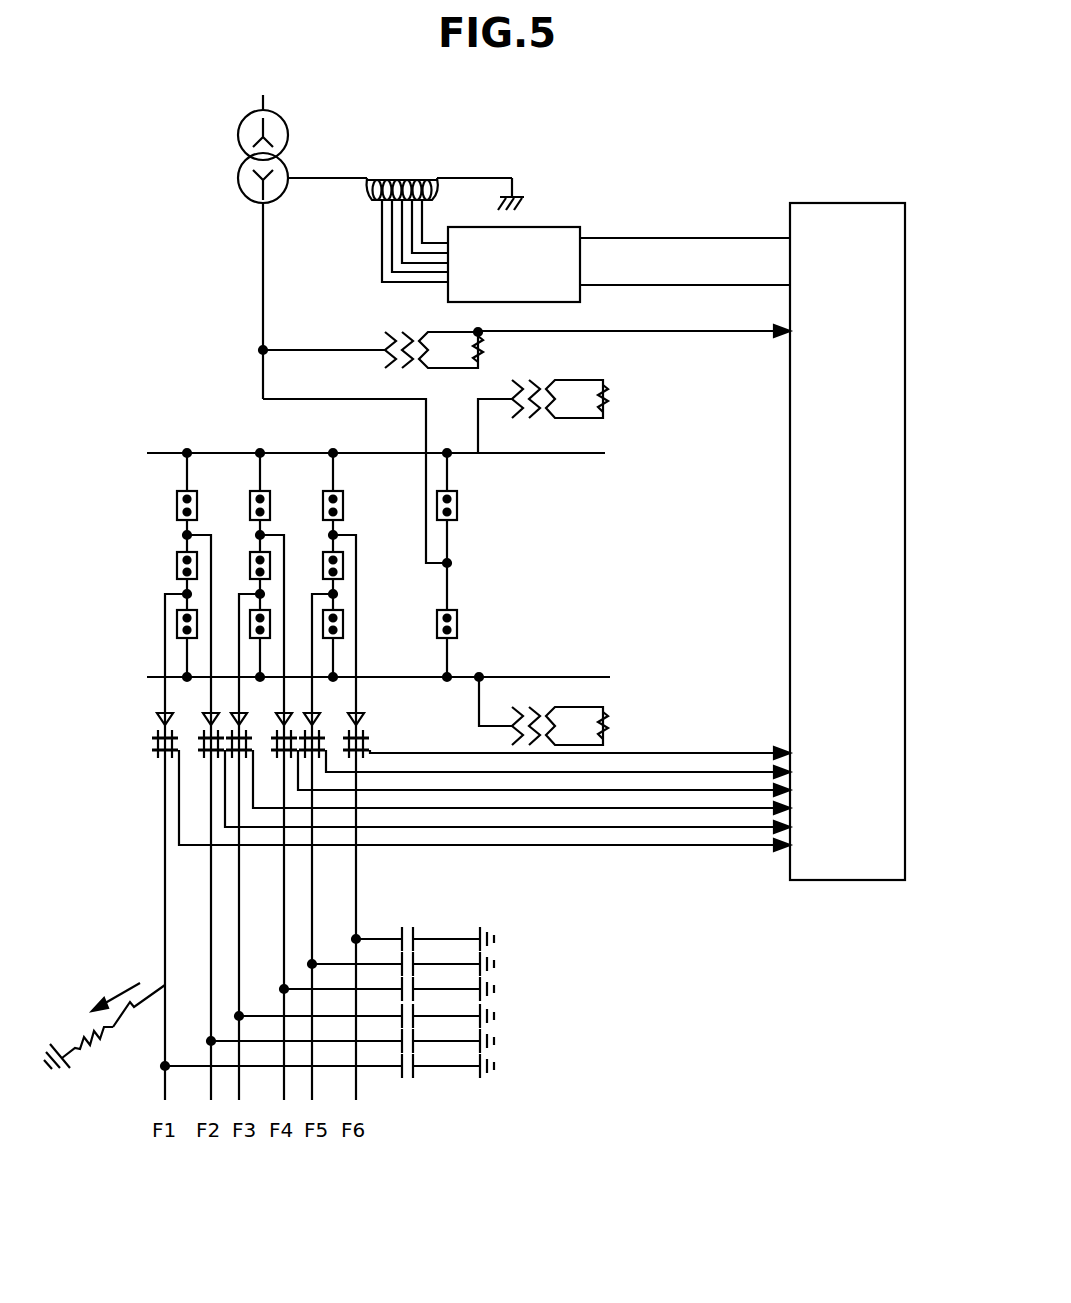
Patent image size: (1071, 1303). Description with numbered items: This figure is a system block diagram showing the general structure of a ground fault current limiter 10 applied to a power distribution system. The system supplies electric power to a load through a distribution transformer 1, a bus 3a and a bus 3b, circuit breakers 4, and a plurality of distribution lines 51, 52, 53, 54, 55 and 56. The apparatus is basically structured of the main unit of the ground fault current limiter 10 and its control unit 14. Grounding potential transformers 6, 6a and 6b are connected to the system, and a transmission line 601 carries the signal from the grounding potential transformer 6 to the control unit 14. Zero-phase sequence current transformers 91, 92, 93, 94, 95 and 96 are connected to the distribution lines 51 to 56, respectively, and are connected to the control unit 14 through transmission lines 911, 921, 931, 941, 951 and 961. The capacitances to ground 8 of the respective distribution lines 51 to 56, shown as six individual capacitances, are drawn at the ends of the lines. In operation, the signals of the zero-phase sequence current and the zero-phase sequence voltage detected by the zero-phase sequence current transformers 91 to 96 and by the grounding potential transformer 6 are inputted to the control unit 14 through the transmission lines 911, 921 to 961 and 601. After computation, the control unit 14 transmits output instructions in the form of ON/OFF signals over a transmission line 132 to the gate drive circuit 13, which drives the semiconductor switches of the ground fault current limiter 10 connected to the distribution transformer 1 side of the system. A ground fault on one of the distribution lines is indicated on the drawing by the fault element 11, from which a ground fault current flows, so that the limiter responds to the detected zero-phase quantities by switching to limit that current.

The distribution transformer 1 is at (214, 169).
The ground fault current limiter 10 is at (445, 211).
The gate drive circuit 13 is at (480, 214).
The transmission line 132 is at (667, 238).
The control unit 14 is at (847, 882).
The grounding potential transformer 6 is at (418, 326).
The grounding potential transformer 6a is at (568, 376).
The grounding potential transformer 6b is at (548, 705).
The transmission line 601 is at (718, 333).
The bus 3a is at (573, 455).
The bus 3b is at (576, 676).
The circuit breakers 4 is at (177, 503).
The distribution line 51 is at (164, 873).
The distribution line 52 is at (210, 960).
The distribution line 53 is at (241, 913).
The distribution line 54 is at (284, 912).
The distribution line 55 is at (313, 913).
The distribution line 56 is at (358, 873).
The zero-phase sequence current transformer 91 is at (152, 741).
The zero-phase sequence current transformer 92 is at (198, 741).
The zero-phase sequence current transformer 93 is at (252, 740).
The zero-phase sequence current transformer 94 is at (297, 740).
The zero-phase sequence current transformer 95 is at (326, 742).
The zero-phase sequence current transformer 96 is at (370, 739).
The transmission line 911 is at (670, 847).
The transmission line 921 is at (600, 829).
The transmission line 931 is at (527, 810).
The transmission line 941 is at (752, 789).
The transmission line 951 is at (722, 771).
The transmission line 961 is at (680, 752).
The capacitances to ground 8 is at (416, 1109).
The ground fault 11 is at (102, 1052).